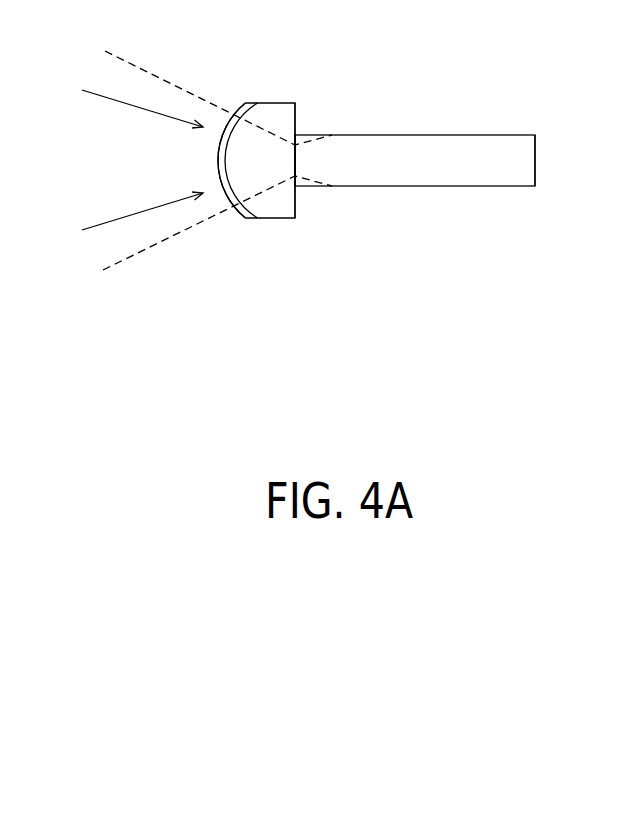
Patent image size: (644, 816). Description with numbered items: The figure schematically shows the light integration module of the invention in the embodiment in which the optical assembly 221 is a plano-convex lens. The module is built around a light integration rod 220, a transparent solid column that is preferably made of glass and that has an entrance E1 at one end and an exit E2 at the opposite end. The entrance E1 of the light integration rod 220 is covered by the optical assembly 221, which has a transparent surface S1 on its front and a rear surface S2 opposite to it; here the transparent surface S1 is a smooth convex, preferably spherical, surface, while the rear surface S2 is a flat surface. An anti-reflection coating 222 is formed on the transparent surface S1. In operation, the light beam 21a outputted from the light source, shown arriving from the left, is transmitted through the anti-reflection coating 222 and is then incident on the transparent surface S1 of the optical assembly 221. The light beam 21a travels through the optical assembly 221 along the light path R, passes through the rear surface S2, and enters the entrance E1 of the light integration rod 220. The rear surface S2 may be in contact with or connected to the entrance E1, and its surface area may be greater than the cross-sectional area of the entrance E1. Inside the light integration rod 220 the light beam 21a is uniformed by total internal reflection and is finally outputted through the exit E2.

The light integration rod 220 is at (477, 158).
The optical assembly 221 is at (290, 128).
The anti-reflection coating 222 is at (241, 106).
The transparent surface S1 is at (222, 149).
The rear surface S2 is at (293, 203).
The entrance E1 is at (297, 167).
The exit E2 is at (538, 169).
The light path R is at (267, 150).
The light beam 21a is at (205, 160).